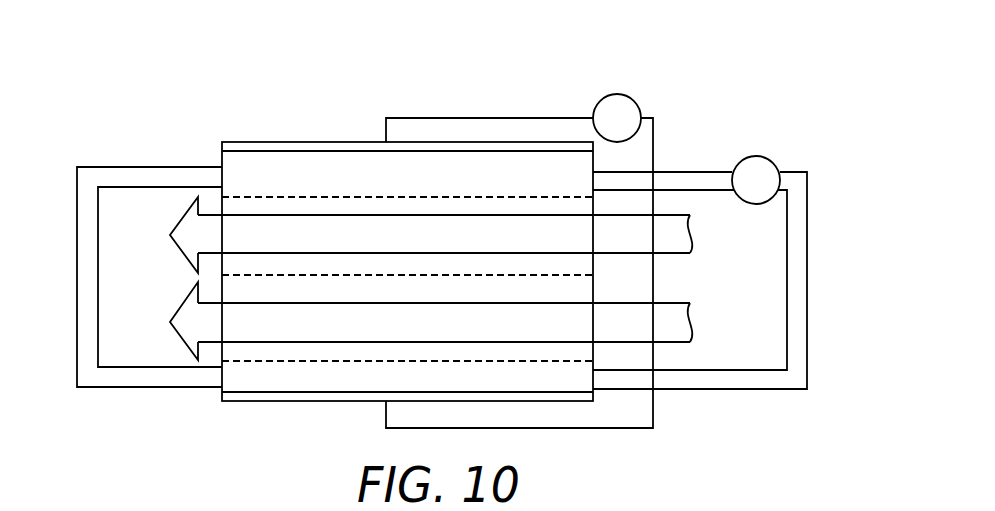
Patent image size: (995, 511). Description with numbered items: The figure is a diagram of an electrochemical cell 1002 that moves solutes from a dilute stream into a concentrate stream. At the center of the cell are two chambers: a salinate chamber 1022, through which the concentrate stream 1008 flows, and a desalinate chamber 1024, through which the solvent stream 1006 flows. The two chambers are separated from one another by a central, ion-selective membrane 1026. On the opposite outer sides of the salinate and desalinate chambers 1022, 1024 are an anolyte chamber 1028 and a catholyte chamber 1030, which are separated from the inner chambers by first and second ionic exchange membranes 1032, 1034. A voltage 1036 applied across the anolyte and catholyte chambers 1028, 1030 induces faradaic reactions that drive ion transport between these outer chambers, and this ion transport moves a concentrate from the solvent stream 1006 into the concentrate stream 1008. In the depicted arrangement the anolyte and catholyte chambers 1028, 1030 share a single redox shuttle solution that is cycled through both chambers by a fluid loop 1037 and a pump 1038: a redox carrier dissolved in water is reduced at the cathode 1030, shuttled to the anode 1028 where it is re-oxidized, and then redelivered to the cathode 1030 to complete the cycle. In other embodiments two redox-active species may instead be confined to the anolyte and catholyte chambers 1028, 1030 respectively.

The electrochemical cell 1002 is at (278, 88).
The solvent stream 1006 is at (692, 233).
The concentrate stream 1008 is at (692, 322).
The salinate chamber 1022 is at (235, 292).
The desalinate chamber 1024 is at (233, 207).
The ion-selective membrane 1026 is at (233, 275).
The anolyte chamber 1028 is at (336, 163).
The catholyte chamber 1030 is at (312, 383).
The first ionic exchange membrane 1032 is at (275, 197).
The second ionic exchange membrane 1034 is at (252, 362).
The voltage 1036 is at (595, 103).
The fluid loop 1037 is at (695, 172).
The pump 1038 is at (764, 157).